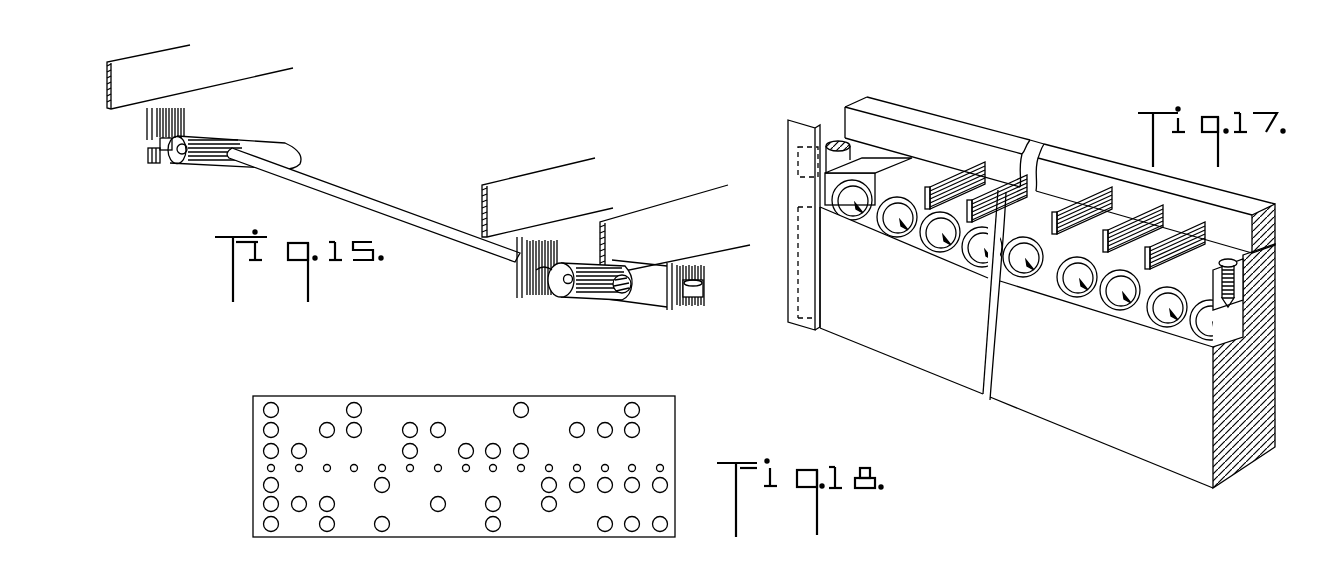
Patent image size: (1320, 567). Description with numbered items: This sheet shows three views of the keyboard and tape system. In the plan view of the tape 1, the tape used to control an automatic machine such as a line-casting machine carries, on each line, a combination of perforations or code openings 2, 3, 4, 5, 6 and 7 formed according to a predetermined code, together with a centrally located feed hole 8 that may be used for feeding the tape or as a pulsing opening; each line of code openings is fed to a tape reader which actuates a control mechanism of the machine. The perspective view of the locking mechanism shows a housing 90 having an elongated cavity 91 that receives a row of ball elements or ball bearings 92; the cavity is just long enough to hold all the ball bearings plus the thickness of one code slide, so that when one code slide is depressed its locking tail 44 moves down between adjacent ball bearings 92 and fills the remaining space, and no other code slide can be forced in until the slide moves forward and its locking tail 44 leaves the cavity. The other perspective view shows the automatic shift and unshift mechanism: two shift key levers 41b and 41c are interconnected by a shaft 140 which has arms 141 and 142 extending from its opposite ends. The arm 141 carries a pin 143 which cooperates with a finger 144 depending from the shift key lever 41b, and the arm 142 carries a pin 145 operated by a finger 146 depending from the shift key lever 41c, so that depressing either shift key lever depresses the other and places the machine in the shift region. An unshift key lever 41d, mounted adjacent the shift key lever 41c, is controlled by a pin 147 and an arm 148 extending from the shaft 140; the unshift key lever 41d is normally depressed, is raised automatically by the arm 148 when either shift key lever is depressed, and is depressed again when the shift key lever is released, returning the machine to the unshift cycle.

In FIG. 18, the tape 1 is at (316, 396).
In FIG. 18, the code opening 2 is at (352, 403).
In FIG. 18, the code opening 3 is at (361, 426).
In FIG. 18, the code opening 4 is at (263, 449).
In FIG. 18, the code opening 5 is at (263, 485).
In FIG. 18, the code opening 6 is at (263, 504).
In FIG. 18, the code opening 7 is at (263, 525).
In FIG. 18, the feed hole 8 is at (267, 467).
In FIG. 15, the shift key lever 41b is at (218, 80).
In FIG. 15, the shift key lever 41c is at (511, 187).
In FIG. 15, the unshift key lever 41d is at (730, 237).
In FIG. 17, the locking tail 44 is at (1115, 238).
In FIG. 17, the housing 90 is at (1267, 327).
In FIG. 17, the cavity 91 is at (1218, 348).
In FIG. 17, the ball bearings 92 is at (1138, 308).
In FIG. 15, the shaft 140 is at (373, 195).
In FIG. 15, the arm 141 is at (207, 162).
In FIG. 15, the arm 142 is at (588, 288).
In FIG. 15, the pin 143 is at (160, 150).
In FIG. 15, the finger 144 is at (162, 127).
In FIG. 15, the pin 145 is at (565, 283).
In FIG. 15, the finger 146 is at (522, 268).
In FIG. 15, the pin 147 is at (687, 298).
In FIG. 15, the arm 148 is at (655, 292).